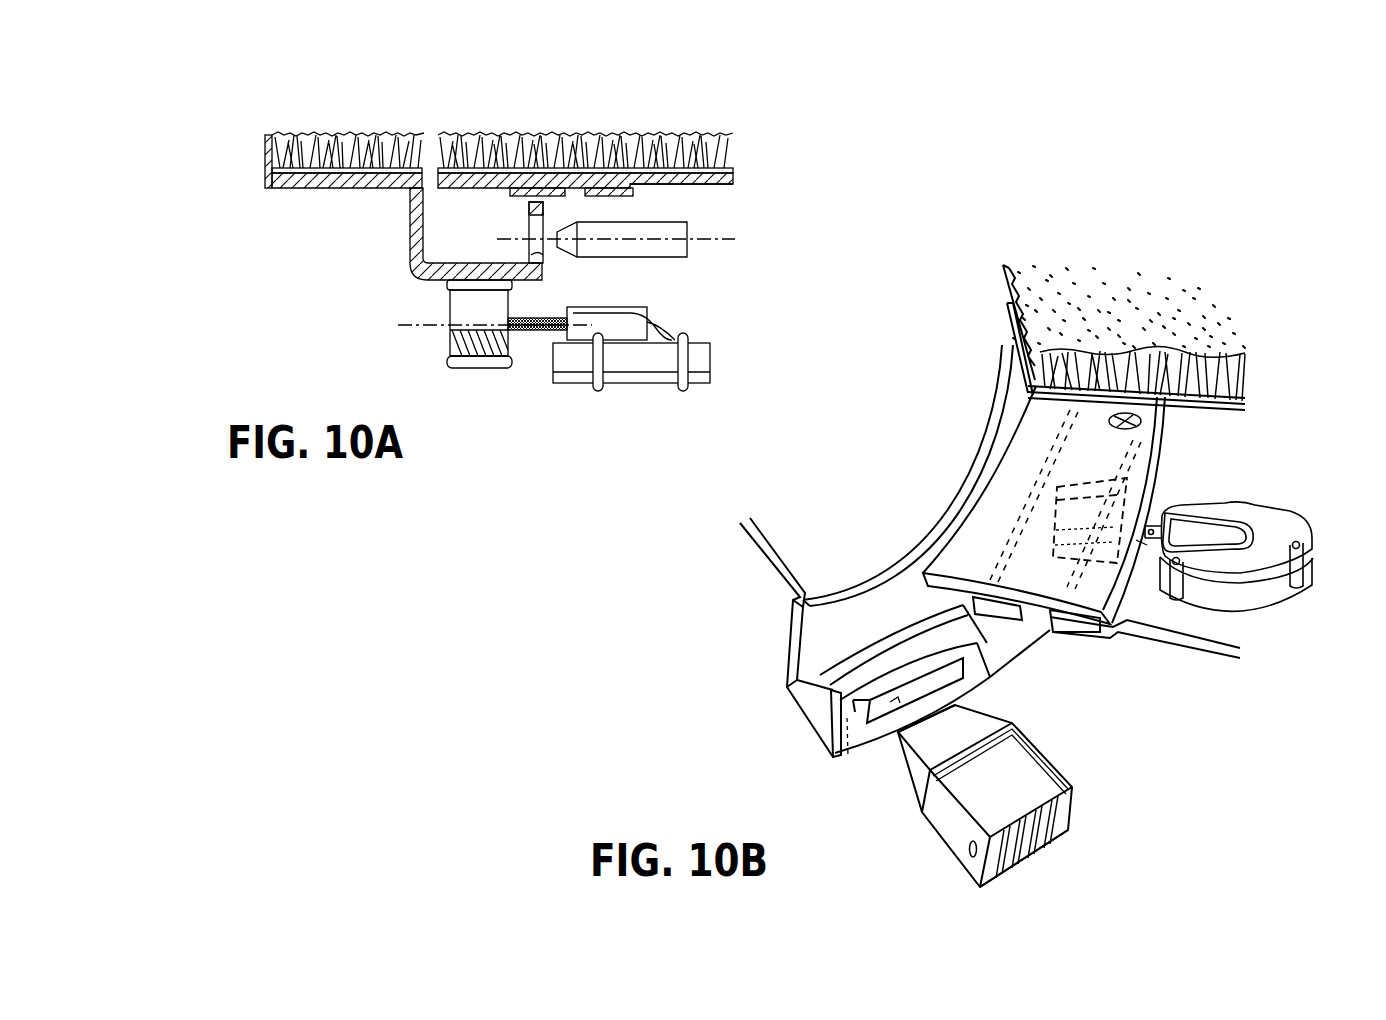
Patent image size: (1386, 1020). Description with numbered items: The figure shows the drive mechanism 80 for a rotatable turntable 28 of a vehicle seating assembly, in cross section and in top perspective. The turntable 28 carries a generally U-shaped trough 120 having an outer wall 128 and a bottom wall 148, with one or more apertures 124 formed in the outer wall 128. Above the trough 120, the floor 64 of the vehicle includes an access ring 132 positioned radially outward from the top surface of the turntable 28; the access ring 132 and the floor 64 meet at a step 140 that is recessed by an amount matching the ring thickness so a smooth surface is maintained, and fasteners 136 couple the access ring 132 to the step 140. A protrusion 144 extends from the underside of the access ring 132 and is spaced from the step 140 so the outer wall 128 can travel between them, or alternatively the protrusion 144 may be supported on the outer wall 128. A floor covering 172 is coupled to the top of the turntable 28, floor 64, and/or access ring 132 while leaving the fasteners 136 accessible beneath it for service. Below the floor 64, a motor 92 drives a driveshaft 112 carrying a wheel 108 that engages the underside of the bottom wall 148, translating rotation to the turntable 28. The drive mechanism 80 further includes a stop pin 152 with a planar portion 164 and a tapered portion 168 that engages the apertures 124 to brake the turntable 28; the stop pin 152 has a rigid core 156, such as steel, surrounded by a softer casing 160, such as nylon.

In FIG. 10A, the turntable 28 is at (308, 165).
In FIG. 10B, the turntable 28 is at (823, 535).
In FIG. 10A, the floor covering 172 is at (362, 150).
In FIG. 10B, the floor covering 172 is at (1117, 330).
In FIG. 10A, the trough 120 is at (452, 256).
In FIG. 10B, the trough 120 is at (820, 691).
In FIG. 10A, the access ring 132 is at (498, 175).
In FIG. 10B, the access ring 132 is at (1040, 445).
In FIG. 10A, the protrusion 144 is at (533, 165).
In FIG. 10B, the protrusion 144 is at (1007, 617).
In FIG. 10A, the step 140 is at (608, 165).
In FIG. 10B, the step 140 is at (1072, 628).
In FIG. 10A, the floor 64 is at (712, 186).
In FIG. 10B, the floor 64 is at (1217, 646).
In FIG. 10A, the outer wall 128 is at (546, 210).
In FIG. 10B, the outer wall 128 is at (850, 727).
In FIG. 10A, the stop pin 152 is at (690, 231).
In FIG. 10B, the stop pin 152 is at (952, 821).
In FIG. 10A, the planar portion 164 is at (670, 248).
In FIG. 10B, the planar portion 164 is at (1018, 793).
In FIG. 10A, the tapered portion 168 is at (537, 250).
In FIG. 10B, the tapered portion 168 is at (915, 772).
In FIG. 10A, the aperture 124 is at (540, 252).
In FIG. 10B, the aperture 124 is at (895, 702).
In FIG. 10A, the drive mechanism 80 is at (712, 354).
In FIG. 10B, the drive mechanism 80 is at (1290, 510).
In FIG. 10A, the bottom wall 148 is at (438, 278).
In FIG. 10B, the bottom wall 148 is at (820, 712).
In FIG. 10A, the wheel 108 is at (450, 306).
In FIG. 10B, the wheel 108 is at (1113, 487).
In FIG. 10A, the driveshaft 112 is at (535, 345).
In FIG. 10B, the driveshaft 112 is at (1147, 545).
In FIG. 10A, the motor 92 is at (642, 360).
In FIG. 10B, the motor 92 is at (1267, 597).
In FIG. 10B, the fastener 136 is at (1136, 411).
In FIG. 10B, the core 156 is at (1022, 838).
In FIG. 10B, the casing 160 is at (992, 868).